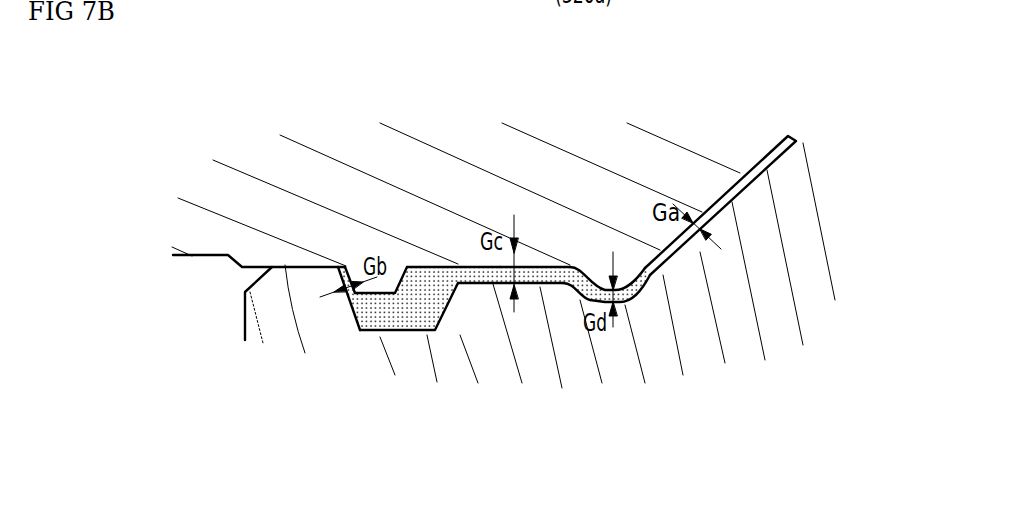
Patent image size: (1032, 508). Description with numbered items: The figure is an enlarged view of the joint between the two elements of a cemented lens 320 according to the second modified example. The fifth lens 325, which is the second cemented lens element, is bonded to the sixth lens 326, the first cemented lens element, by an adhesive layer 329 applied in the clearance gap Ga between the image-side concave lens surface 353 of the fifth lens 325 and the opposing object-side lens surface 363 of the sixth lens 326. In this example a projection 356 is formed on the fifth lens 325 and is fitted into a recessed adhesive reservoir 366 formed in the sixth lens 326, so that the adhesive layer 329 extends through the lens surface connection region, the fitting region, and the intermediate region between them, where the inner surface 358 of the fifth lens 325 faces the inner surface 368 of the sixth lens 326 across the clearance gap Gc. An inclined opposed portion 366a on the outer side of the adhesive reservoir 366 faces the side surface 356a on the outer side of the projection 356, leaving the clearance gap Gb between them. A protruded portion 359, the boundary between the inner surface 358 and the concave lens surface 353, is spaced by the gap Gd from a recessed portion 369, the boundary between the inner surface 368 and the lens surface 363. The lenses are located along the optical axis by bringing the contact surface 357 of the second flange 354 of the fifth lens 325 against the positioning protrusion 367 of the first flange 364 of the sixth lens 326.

The cemented lens 320 is at (110, 84).
The fifth lens 325 is at (205, 256).
The sixth lens 326 is at (245, 314).
The adhesive layer 329 is at (455, 265).
The image-side concave lens surface 353 is at (723, 188).
The second flange 354 is at (210, 237).
The projection 356 is at (405, 264).
The side surface 356a is at (340, 278).
The contact surface 357 is at (273, 267).
The inner surface 358 is at (543, 277).
The protruded portion 359 is at (593, 283).
The object-side lens surface 363 is at (692, 243).
The first flange 364 is at (282, 322).
The adhesive reservoir 366 is at (417, 333).
The opposed portion 366a is at (355, 360).
The positioning protrusion 367 is at (292, 270).
The inner surface 368 is at (547, 288).
The recessed portion 369 is at (628, 305).